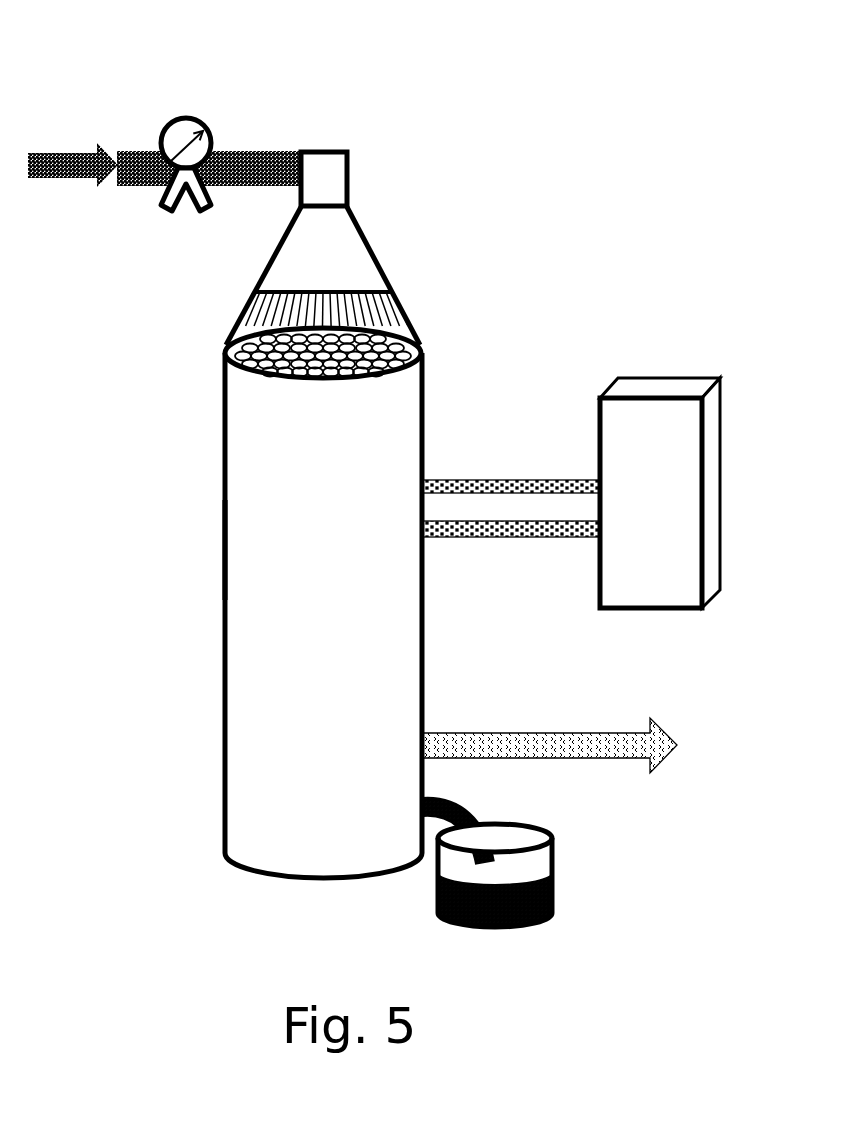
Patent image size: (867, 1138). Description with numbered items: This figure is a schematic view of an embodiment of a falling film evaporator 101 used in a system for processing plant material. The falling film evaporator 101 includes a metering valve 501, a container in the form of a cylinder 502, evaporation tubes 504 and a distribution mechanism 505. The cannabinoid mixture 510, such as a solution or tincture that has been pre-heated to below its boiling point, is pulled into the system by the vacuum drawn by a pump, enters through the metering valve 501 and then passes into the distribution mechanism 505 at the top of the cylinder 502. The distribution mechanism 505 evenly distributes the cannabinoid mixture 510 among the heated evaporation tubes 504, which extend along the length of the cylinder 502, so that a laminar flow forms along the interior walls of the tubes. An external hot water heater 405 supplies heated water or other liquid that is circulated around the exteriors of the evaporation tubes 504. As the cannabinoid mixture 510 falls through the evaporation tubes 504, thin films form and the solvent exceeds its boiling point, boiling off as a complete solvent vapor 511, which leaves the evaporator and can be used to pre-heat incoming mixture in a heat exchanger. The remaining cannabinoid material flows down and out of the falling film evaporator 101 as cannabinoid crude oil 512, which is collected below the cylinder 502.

The cannabinoid mixture 510 is at (82, 142).
The metering valve 501 is at (188, 115).
The distribution mechanism 505 is at (365, 231).
The evaporation tubes 504 is at (400, 350).
The falling film evaporator 101 is at (217, 443).
The container 502 is at (217, 545).
The hot water heater 405 is at (672, 613).
The solvent vapor 511 is at (598, 765).
The cannabinoid crude oil 512 is at (563, 898).